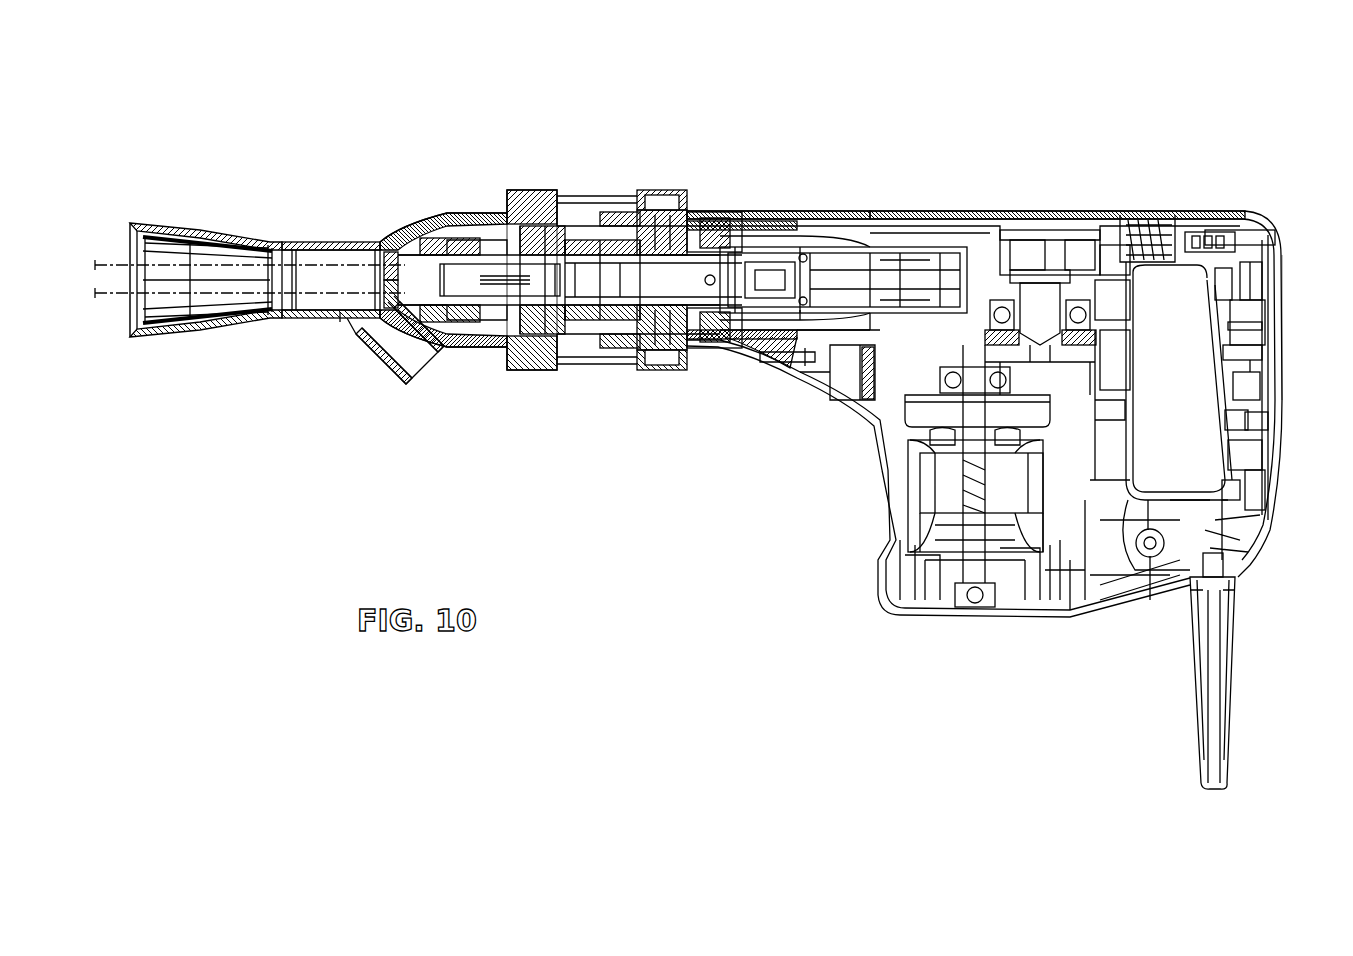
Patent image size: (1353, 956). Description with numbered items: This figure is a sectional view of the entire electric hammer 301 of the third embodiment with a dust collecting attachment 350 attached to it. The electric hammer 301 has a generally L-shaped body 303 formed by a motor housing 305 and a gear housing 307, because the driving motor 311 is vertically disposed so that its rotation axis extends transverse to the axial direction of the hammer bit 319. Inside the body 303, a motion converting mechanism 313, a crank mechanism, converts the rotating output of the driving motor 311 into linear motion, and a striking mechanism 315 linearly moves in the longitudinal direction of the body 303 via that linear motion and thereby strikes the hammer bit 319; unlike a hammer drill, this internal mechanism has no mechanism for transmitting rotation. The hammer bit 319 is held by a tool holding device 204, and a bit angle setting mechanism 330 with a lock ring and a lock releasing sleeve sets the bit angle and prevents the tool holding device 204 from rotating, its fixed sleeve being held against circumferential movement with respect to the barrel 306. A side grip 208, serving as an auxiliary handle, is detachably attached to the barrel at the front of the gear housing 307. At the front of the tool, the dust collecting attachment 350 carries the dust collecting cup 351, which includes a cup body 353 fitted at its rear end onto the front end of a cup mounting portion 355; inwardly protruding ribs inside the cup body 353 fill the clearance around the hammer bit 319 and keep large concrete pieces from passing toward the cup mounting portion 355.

The electric hammer 301 is at (1252, 176).
The body 303 is at (920, 210).
The motor housing 305 is at (887, 495).
The barrel 306 is at (713, 214).
The gear housing 307 is at (818, 210).
The driving motor 311 is at (937, 468).
The motion converting mechanism 313 is at (1033, 285).
The striking mechanism 315 is at (715, 305).
The hammer bit 319 is at (103, 262).
The bit angle setting mechanism 330 is at (567, 227).
The dust collecting attachment 350 is at (360, 342).
The dust collecting cup 351 is at (313, 246).
The cup body 353 is at (219, 240).
The cup mounting portion 355 is at (418, 212).
The tool holding device 204 is at (479, 236).
The side grip 208 is at (648, 188).